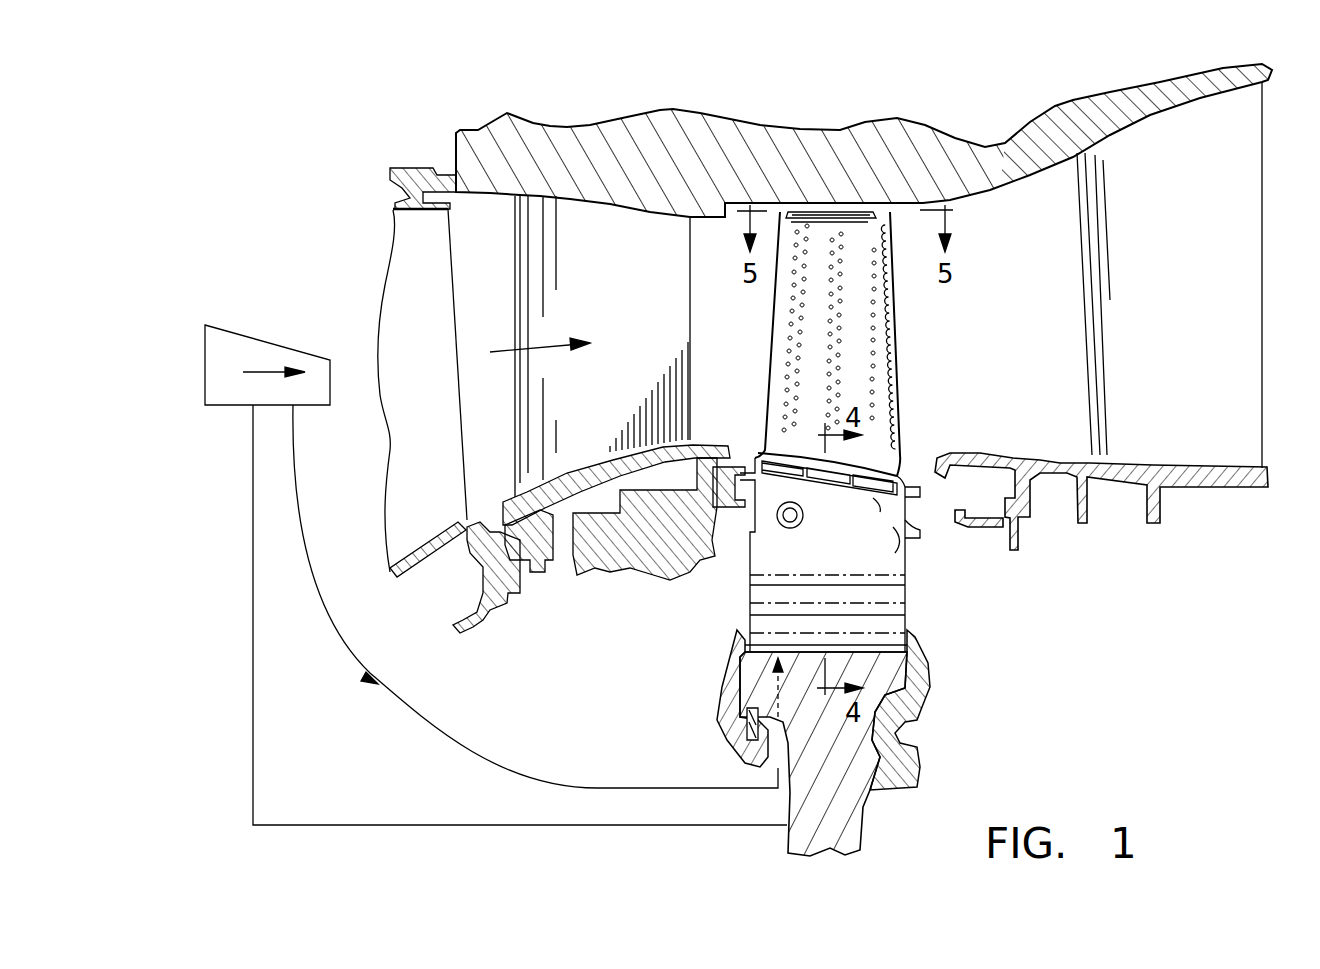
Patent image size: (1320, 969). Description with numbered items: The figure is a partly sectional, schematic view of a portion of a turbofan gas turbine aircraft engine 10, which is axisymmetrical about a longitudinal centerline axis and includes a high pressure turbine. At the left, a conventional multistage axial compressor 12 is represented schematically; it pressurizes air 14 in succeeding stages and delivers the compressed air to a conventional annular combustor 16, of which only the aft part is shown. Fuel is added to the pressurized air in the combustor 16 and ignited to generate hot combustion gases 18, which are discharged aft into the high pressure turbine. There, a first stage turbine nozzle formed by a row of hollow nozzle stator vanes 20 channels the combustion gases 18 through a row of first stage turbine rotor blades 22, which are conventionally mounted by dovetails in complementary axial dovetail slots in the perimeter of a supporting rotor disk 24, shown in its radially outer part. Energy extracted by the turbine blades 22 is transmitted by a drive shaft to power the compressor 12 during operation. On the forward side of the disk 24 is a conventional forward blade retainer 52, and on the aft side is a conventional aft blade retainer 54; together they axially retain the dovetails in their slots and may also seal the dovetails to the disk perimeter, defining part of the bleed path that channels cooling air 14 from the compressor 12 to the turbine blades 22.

The turbofan gas turbine aircraft engine 10 is at (990, 78).
The multistage axial compressor 12 is at (290, 343).
The air 14 is at (265, 372).
The annular combustor 16 is at (434, 305).
The hot combustion gases 18 is at (553, 337).
The nozzle stator vanes 20 is at (642, 281).
The first stage turbine rotor blades 22 is at (915, 328).
The rotor disk 24 is at (867, 817).
The forward blade retainer 52 is at (718, 700).
The aft blade retainer 54 is at (933, 682).